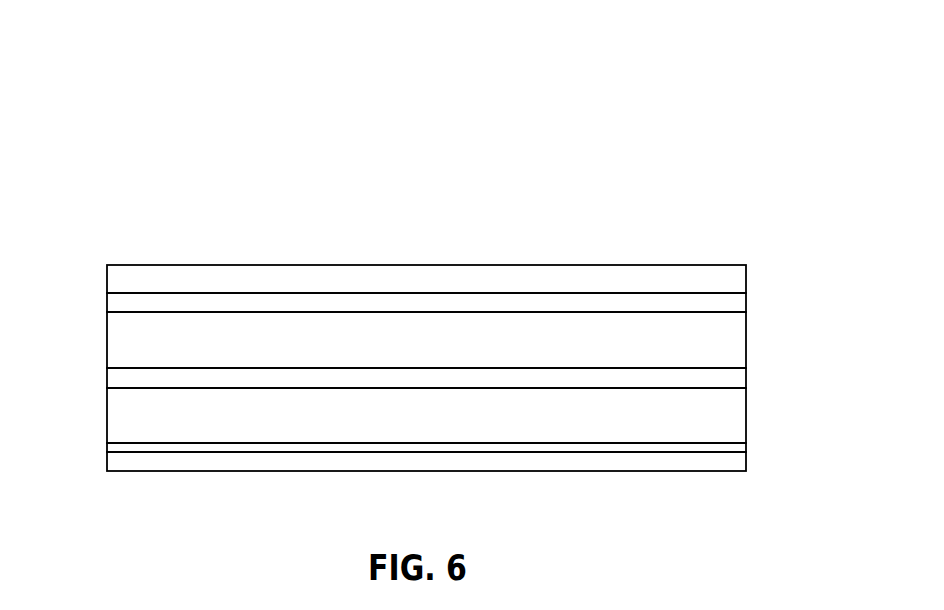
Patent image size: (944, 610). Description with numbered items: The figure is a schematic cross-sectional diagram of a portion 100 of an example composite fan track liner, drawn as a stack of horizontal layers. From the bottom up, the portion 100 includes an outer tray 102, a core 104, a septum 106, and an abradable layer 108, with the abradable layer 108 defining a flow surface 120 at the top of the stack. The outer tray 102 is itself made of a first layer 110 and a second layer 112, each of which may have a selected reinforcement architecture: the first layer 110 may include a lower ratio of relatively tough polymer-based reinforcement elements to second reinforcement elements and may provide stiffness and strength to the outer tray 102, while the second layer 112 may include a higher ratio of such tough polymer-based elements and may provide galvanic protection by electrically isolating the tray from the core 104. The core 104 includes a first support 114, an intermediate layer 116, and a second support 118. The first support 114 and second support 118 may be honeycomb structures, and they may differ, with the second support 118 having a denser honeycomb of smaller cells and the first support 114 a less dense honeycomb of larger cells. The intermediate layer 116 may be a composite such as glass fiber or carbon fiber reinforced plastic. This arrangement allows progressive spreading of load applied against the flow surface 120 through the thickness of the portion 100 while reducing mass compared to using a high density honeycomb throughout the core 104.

The portion 100 is at (448, 261).
The outer tray 102 is at (454, 470).
The core 104 is at (454, 377).
The septum 106 is at (735, 303).
The abradable layer 108 is at (735, 281).
The first layer 110 is at (742, 463).
The second layer 112 is at (735, 450).
The first support 114 is at (735, 410).
The intermediate layer 116 is at (735, 381).
The second support 118 is at (735, 336).
The flow surface 120 is at (454, 348).